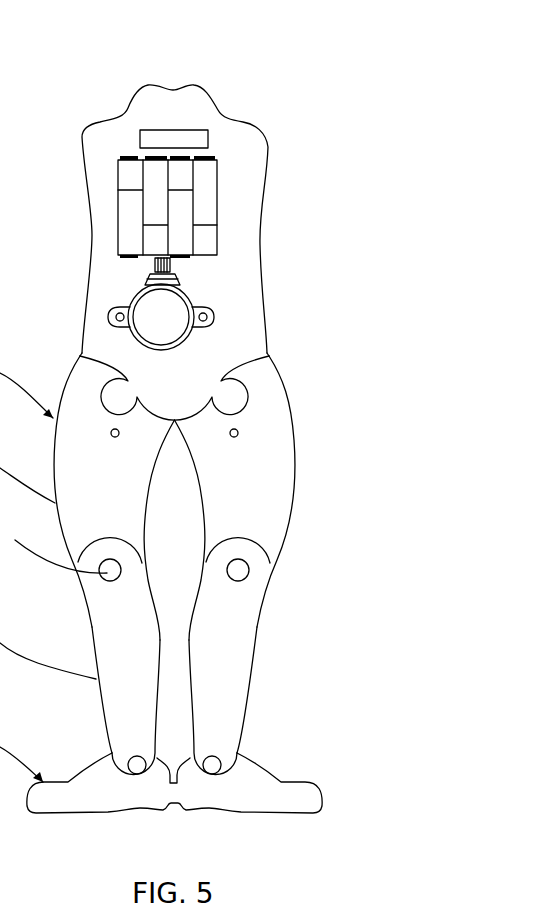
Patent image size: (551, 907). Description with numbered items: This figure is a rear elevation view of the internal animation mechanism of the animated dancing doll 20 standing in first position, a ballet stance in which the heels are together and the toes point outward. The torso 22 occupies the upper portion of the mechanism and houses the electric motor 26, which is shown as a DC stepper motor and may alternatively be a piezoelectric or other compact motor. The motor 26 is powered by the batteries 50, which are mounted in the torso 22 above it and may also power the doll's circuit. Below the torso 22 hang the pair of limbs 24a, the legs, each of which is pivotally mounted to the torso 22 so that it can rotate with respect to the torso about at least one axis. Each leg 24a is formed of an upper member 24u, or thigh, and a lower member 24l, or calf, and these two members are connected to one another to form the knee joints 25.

The doll 20 is at (80, 75).
The torso 22 is at (82, 146).
The batteries 50 is at (268, 200).
The electric motor 26 is at (172, 317).
The limbs 24a is at (313, 420).
The upper member 24u is at (293, 483).
The lower member 24l is at (256, 654).
The knee joints 25 is at (240, 577).